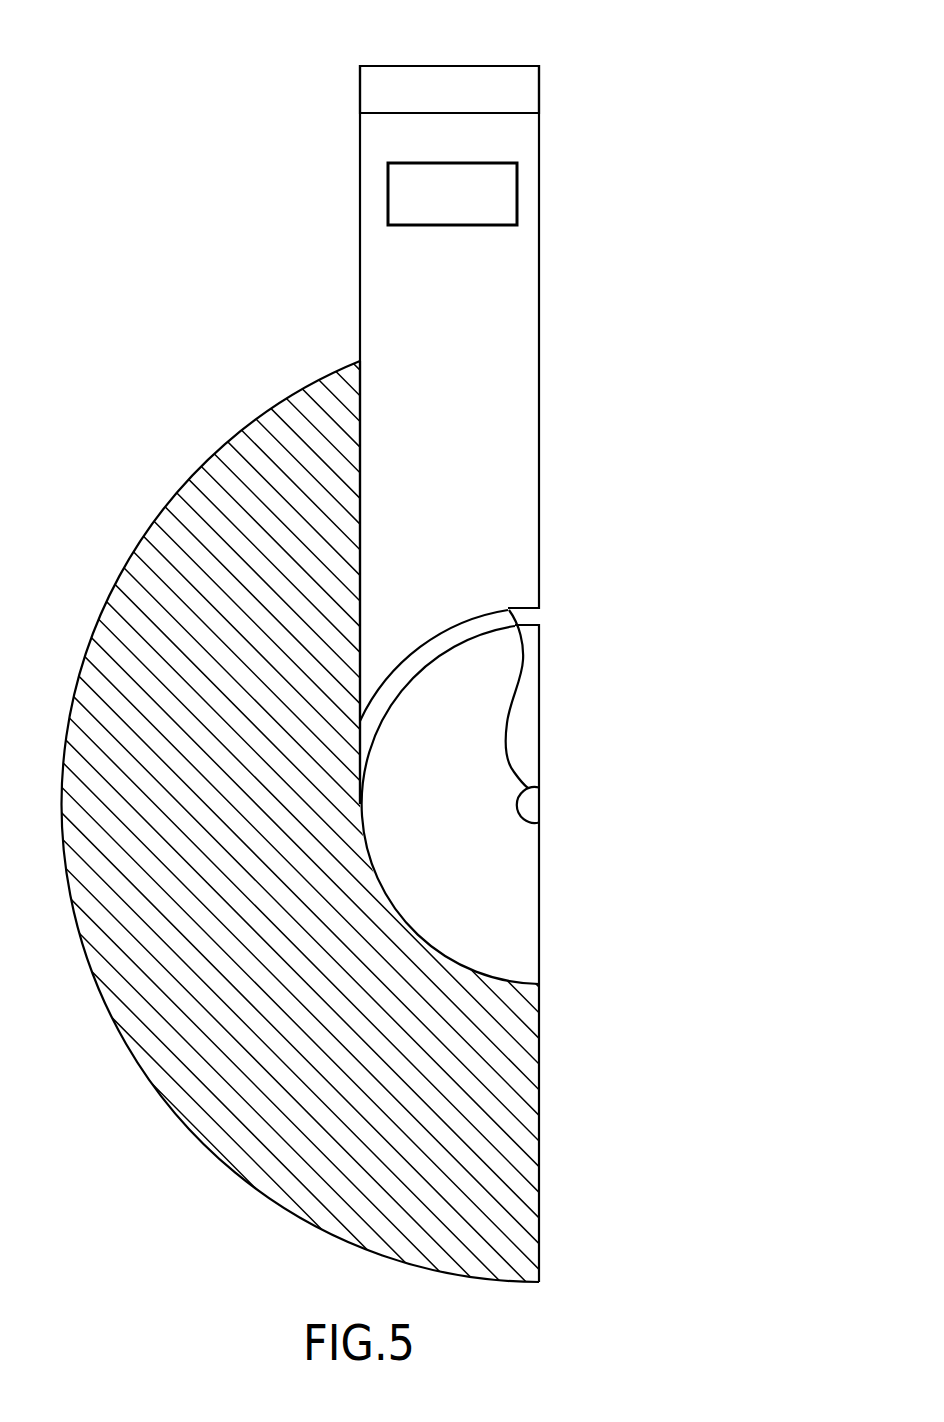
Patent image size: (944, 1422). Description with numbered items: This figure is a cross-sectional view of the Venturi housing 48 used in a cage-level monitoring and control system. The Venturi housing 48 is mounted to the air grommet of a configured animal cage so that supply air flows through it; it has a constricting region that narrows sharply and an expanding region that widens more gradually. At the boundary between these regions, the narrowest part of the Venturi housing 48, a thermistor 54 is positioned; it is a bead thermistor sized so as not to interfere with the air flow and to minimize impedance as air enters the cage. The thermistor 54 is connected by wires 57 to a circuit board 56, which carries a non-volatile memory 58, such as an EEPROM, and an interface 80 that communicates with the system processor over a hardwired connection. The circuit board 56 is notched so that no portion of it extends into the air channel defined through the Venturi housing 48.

The Venturi housing 48 is at (136, 545).
The circuit board 56 is at (360, 283).
The interface 80 is at (490, 80).
The non-volatile memory 58 is at (518, 190).
The wires 57 is at (507, 737).
The thermistor 54 is at (529, 803).